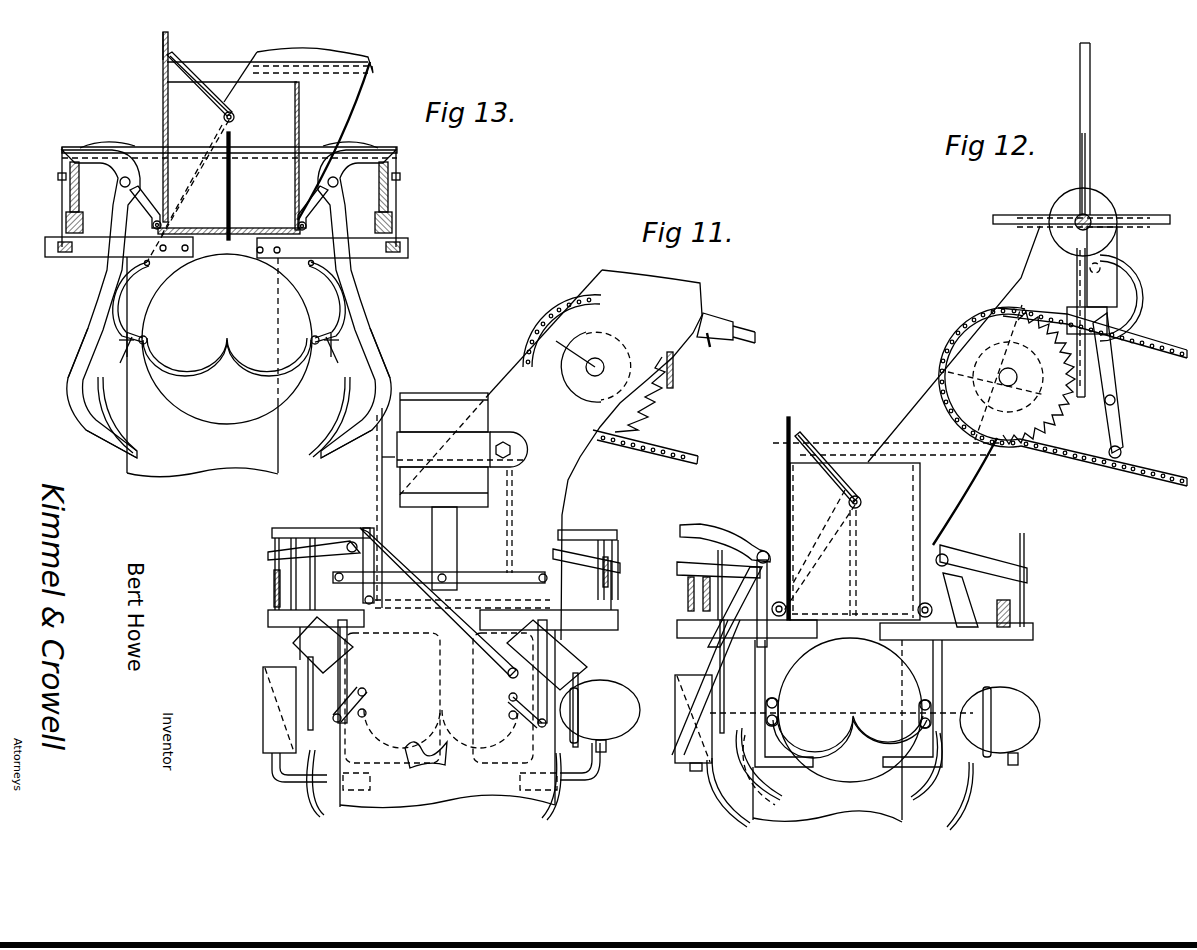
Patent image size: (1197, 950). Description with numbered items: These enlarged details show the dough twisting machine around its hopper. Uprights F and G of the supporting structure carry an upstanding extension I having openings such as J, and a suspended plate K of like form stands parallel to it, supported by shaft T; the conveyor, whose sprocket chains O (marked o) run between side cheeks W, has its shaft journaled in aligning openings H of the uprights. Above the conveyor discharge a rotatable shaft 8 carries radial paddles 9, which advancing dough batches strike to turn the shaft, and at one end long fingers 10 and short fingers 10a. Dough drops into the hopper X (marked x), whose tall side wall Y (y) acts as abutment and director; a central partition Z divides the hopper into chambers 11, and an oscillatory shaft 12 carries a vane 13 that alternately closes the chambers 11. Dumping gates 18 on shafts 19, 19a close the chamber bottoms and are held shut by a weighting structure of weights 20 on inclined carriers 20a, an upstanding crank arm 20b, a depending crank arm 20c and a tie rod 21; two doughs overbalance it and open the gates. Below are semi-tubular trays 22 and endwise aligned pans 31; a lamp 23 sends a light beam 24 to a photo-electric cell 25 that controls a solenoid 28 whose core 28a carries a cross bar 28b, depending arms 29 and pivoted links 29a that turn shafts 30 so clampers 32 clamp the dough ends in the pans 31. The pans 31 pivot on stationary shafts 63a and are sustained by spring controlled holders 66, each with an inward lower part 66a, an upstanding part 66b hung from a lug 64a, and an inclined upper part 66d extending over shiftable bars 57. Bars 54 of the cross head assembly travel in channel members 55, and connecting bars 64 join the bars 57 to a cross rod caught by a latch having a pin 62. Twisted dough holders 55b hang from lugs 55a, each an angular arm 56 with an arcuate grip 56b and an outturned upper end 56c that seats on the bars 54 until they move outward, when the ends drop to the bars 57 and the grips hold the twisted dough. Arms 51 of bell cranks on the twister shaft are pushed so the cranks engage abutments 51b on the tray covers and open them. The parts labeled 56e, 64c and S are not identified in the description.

In FIG. 12, the rotatable shaft 8 is at (1090, 220).
In FIG. 12, the paddles 9 is at (1158, 216).
In FIG. 12, the long fingers 10 is at (1100, 110).
In FIG. 12, the short fingers 10a is at (1120, 234).
In FIG. 13, the chambers 11 is at (170, 100).
In FIG. 13, the oscillatory shaft 12 is at (236, 115).
In FIG. 12, the oscillatory shaft 12 is at (861, 500).
In FIG. 13, the vane 13 is at (178, 58).
In FIG. 12, the vane 13 is at (808, 441).
In FIG. 13, the dumping gates 18 is at (185, 228).
In FIG. 12, the dumping gates 18 is at (820, 618).
In FIG. 13, the rotatable shaft 19 is at (165, 223).
In FIG. 12, the rotatable shaft 19 is at (786, 610).
In FIG. 13, the rotatable shaft 19a is at (300, 228).
In FIG. 12, the rotatable shaft 19a is at (918, 612).
In FIG. 11, the weights 20 is at (355, 652).
In FIG. 11, the carriers 20a is at (507, 673).
In FIG. 11, the upstanding crank arm 20b is at (392, 562).
In FIG. 11, the depending crank arm 20c is at (412, 634).
In FIG. 11, the tie rod 21 is at (462, 636).
In FIG. 13, the dough receiving trays 22 is at (240, 373).
In FIG. 11, the electric lamp 23 is at (605, 694).
In FIG. 12, the electric lamp 23 is at (1020, 706).
In FIG. 12, the light beam 24 is at (825, 718).
In FIG. 11, the photo-electric cell 25 is at (265, 690).
In FIG. 12, the photo-electric cell 25 is at (675, 684).
In FIG. 11, the solenoid 28 is at (430, 400).
In FIG. 11, the core 28a is at (457, 562).
In FIG. 11, the cross bar 28b is at (457, 585).
In FIG. 11, the depending arms 29 is at (340, 690).
In FIG. 11, the pivoted links 29a is at (368, 712).
In FIG. 11, the shafts 30 is at (368, 692).
In FIG. 12, the shafts 30 is at (778, 700).
In FIG. 11, the pans 31 is at (425, 750).
In FIG. 12, the pans 31 is at (850, 760).
In FIG. 12, the clampers 32 is at (905, 668).
In FIG. 13, the bell crank arms 51 is at (122, 342).
In FIG. 13, the abutments 51b is at (120, 360).
In FIG. 13, the bars 54 is at (70, 172).
In FIG. 11, the bars 54 is at (272, 586).
In FIG. 13, the channel members 55 is at (400, 220).
In FIG. 11, the channel members 55 is at (272, 599).
In FIG. 13, the lugs 55a is at (147, 200).
In FIG. 13, the twisted dough holders 55b is at (92, 285).
In FIG. 11, the twisted dough holders 55b is at (300, 645).
In FIG. 13, the arm 56 is at (88, 330).
In FIG. 13, the grip 56b is at (106, 422).
In FIG. 13, the upper ends 56c is at (80, 147).
In FIG. 13, the arm tip 56e is at (108, 428).
In FIG. 13, the upwardly shiftable bars 57 is at (62, 192).
In FIG. 11, the upwardly shiftable bars 57 is at (272, 573).
In FIG. 13, the bar or pin 62 is at (188, 191).
In FIG. 12, the stationary shafts 63a is at (779, 719).
In FIG. 11, the connecting bars 64 is at (276, 530).
In FIG. 12, the lugs 64a is at (763, 550).
In FIG. 12, the bar 64c is at (775, 560).
In FIG. 11, the holders 66 is at (345, 748).
In FIG. 12, the holders 66 is at (755, 660).
In FIG. 12, the lower part 66a is at (777, 773).
In FIG. 12, the intermediate part 66b is at (962, 600).
In FIG. 12, the upper part 66d is at (1027, 576).
In FIG. 12, the upright F is at (965, 488).
In FIG. 11, the upright G is at (510, 378).
In FIG. 12, the aligning openings H is at (1008, 386).
In FIG. 11, the extension I is at (700, 302).
In FIG. 11, the opening J is at (622, 357).
In FIG. 12, the suspended plate K is at (1010, 278).
In FIG. 11, the sprocket teeth S is at (652, 400).
In FIG. 12, the sprocket teeth S is at (1062, 414).
In FIG. 11, the shaft T is at (571, 348).
In FIG. 11, the side cheeks W is at (711, 346).
In FIG. 13, the partition Z is at (232, 195).
In FIG. 12, the partition Z is at (860, 538).
In FIG. 11, the sprocket chains o is at (752, 338).
In FIG. 12, the sprocket chains o is at (1160, 479).
In FIG. 13, the hopper x is at (300, 90).
In FIG. 13, the side wall y is at (160, 50).
In FIG. 12, the side wall y is at (786, 430).